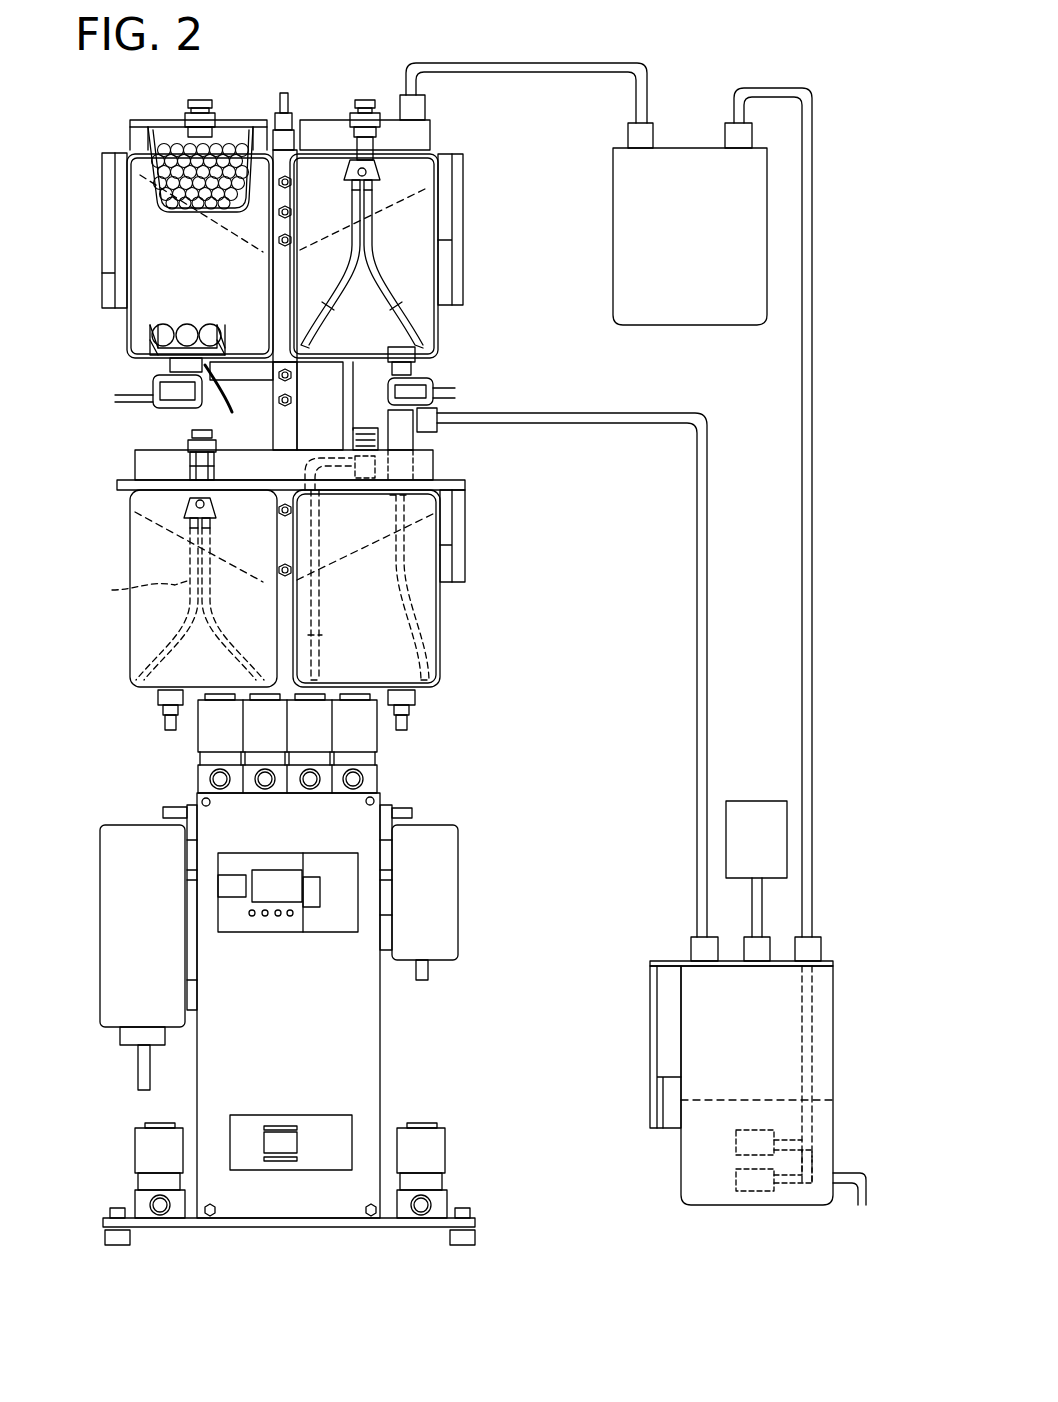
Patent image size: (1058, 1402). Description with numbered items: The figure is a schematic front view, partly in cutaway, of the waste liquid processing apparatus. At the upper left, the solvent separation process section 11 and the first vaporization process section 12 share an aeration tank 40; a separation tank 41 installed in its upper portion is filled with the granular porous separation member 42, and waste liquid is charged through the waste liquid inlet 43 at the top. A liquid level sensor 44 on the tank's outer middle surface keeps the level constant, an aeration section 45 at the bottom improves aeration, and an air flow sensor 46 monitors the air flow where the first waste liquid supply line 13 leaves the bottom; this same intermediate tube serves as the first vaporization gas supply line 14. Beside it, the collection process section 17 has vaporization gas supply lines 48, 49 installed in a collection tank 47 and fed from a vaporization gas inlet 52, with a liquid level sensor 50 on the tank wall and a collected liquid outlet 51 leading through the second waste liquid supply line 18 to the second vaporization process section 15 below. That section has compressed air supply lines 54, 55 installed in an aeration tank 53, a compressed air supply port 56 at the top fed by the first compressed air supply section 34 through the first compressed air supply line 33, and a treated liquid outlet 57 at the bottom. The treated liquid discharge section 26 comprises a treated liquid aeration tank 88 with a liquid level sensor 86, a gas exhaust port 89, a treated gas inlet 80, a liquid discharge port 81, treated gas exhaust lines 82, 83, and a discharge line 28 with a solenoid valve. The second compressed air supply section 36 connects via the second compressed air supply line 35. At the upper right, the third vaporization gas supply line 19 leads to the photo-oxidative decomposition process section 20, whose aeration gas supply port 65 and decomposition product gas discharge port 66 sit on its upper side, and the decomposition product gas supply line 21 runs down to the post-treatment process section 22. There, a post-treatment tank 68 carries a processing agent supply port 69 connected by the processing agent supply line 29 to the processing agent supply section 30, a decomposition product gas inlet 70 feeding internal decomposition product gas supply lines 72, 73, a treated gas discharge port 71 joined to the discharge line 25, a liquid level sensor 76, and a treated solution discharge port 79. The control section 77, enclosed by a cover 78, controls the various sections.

The solvent separation process section 11 is at (136, 178).
The first vaporization process section 12 is at (120, 323).
The first waste liquid supply line 13 is at (135, 393).
The first vaporization gas supply line 14 is at (88, 400).
The second vaporization process section 15 is at (120, 555).
The collection process section 17 is at (450, 305).
The second waste liquid supply line 18 is at (455, 393).
The third vaporization gas supply line 19 is at (520, 63).
The photo-oxidative decomposition process section 20 is at (747, 325).
The decomposition product gas supply line 21 is at (812, 580).
The post-treatment process section 22 is at (850, 1008).
The discharge line 25 is at (580, 425).
The treated liquid discharge section 26 is at (455, 672).
The discharge line 28 is at (408, 730).
The processing agent supply line 29 is at (765, 905).
The processing agent supply section 30 is at (750, 801).
The first compressed air supply line 33 is at (138, 1070).
The first compressed air supply section 34 is at (100, 910).
The second compressed air supply line 35 is at (430, 978).
The second compressed air supply section 36 is at (460, 905).
The aeration tank 40 is at (126, 340).
The separation tank 41 is at (150, 210).
The separation member 42 is at (146, 138).
The waste liquid inlet 43 is at (190, 108).
The liquid level sensor 44 is at (122, 278).
The aeration section 45 is at (152, 322).
The air flow sensor 46 is at (212, 360).
The collection tank 47 is at (437, 332).
The vaporization gas supply line 48 is at (348, 290).
The vaporization gas supply line 49 is at (415, 300).
The liquid level sensor 50 is at (455, 245).
The collected liquid outlet 51 is at (418, 370).
The vaporization gas inlet 52 is at (360, 115).
The aeration tank 53 is at (137, 655).
The compressed air supply line 54 is at (149, 589).
The compressed air supply line 55 is at (222, 630).
The compressed air supply port 56 is at (188, 445).
The treated liquid outlet 57 is at (158, 700).
The aeration gas supply port 65 is at (628, 135).
The decomposition product gas discharge port 66 is at (733, 135).
The post-treatment tank 68 is at (833, 1085).
The processing agent supply port 69 is at (750, 950).
The decomposition product gas inlet 70 is at (821, 950).
The treated gas discharge port 71 is at (700, 950).
The decomposition product gas supply line 72 is at (790, 1130).
The decomposition product gas supply line 73 is at (790, 1195).
The liquid level sensor 76 is at (650, 1095).
The control section 77 is at (335, 932).
The cover 78 is at (382, 1090).
The treated solution discharge port 79 is at (862, 1173).
The treated gas inlet 80 is at (405, 425).
The liquid discharge port 81 is at (415, 705).
The treated gas exhaust line 82 is at (322, 625).
The treated gas exhaust line 83 is at (410, 597).
The liquid level sensor 86 is at (465, 565).
The treated liquid aeration tank 88 is at (440, 643).
The gas exhaust port 89 is at (362, 428).